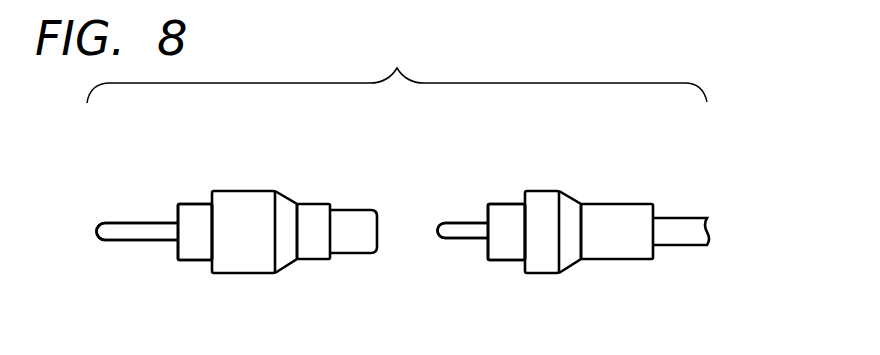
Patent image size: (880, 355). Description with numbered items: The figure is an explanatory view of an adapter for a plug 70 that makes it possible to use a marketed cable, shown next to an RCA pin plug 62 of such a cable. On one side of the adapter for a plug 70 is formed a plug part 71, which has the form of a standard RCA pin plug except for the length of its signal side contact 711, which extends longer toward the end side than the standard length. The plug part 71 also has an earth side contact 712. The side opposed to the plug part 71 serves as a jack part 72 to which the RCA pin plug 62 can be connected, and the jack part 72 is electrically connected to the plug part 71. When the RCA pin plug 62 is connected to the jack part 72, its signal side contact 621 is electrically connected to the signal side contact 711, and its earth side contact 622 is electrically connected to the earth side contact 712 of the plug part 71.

The RCA pin plug 62 is at (550, 176).
The signal side contact 621 is at (453, 233).
The earth side contact 622 is at (507, 253).
The adapter for a plug 70 is at (247, 175).
The plug part 71 is at (155, 195).
The signal side contact 711 is at (113, 233).
The earth side contact 712 is at (192, 253).
The jack part 72 is at (337, 186).